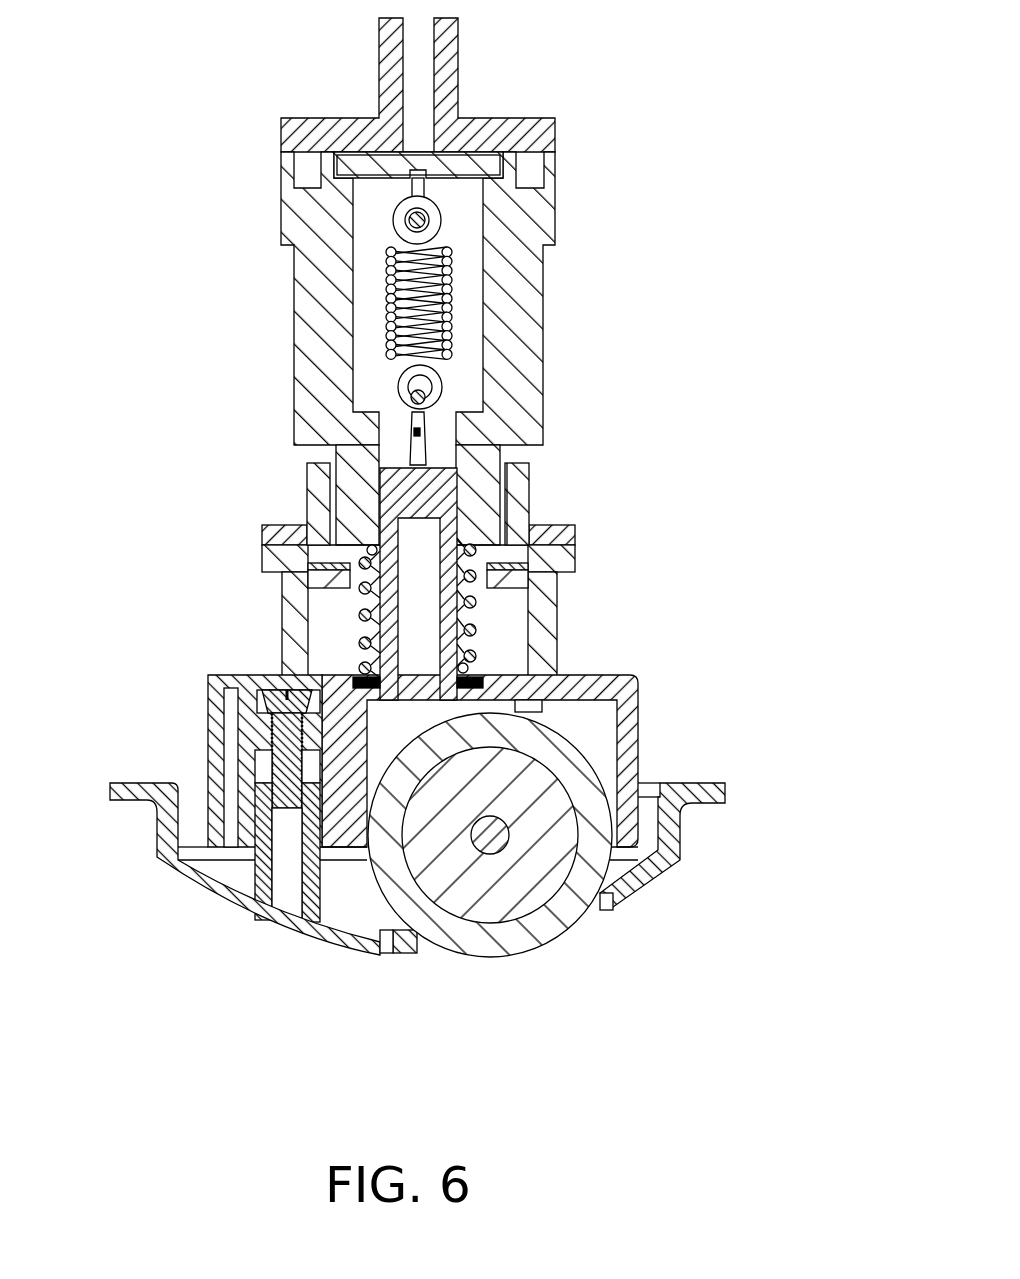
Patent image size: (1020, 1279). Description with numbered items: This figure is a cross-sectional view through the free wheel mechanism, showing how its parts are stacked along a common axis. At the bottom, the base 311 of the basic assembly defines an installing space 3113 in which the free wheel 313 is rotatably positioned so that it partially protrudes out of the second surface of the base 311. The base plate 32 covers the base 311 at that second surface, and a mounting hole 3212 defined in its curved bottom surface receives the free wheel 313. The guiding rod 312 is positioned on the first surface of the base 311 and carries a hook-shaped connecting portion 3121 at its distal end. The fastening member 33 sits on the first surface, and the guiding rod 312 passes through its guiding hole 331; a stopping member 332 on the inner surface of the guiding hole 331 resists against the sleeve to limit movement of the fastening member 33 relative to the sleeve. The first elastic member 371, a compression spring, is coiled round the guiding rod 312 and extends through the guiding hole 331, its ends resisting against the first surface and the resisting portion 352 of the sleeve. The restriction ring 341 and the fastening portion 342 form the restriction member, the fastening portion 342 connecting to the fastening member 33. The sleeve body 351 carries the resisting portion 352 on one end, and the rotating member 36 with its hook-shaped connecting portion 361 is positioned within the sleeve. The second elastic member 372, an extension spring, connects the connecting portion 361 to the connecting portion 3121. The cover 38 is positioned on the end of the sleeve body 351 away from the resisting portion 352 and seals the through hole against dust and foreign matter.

The cover 38 is at (508, 128).
The rotating member 36 is at (487, 167).
The connecting portion 361 is at (422, 193).
The sleeve body 351 is at (522, 287).
The second elastic member 372 is at (444, 310).
The connecting portion 3121 is at (418, 437).
The resisting portion 352 is at (357, 484).
The restriction ring 341 is at (520, 489).
The fastening portion 342 is at (283, 535).
The guiding rod 312 is at (438, 505).
The fastening member 33 is at (292, 563).
The first elastic member 371 is at (357, 637).
The stopping member 332 is at (497, 583).
The guiding hole 331 is at (330, 650).
The installing space 3113 is at (587, 722).
The base 311 is at (218, 702).
The base plate 32 is at (648, 887).
The mounting hole 3212 is at (413, 942).
The free wheel 313 is at (528, 937).